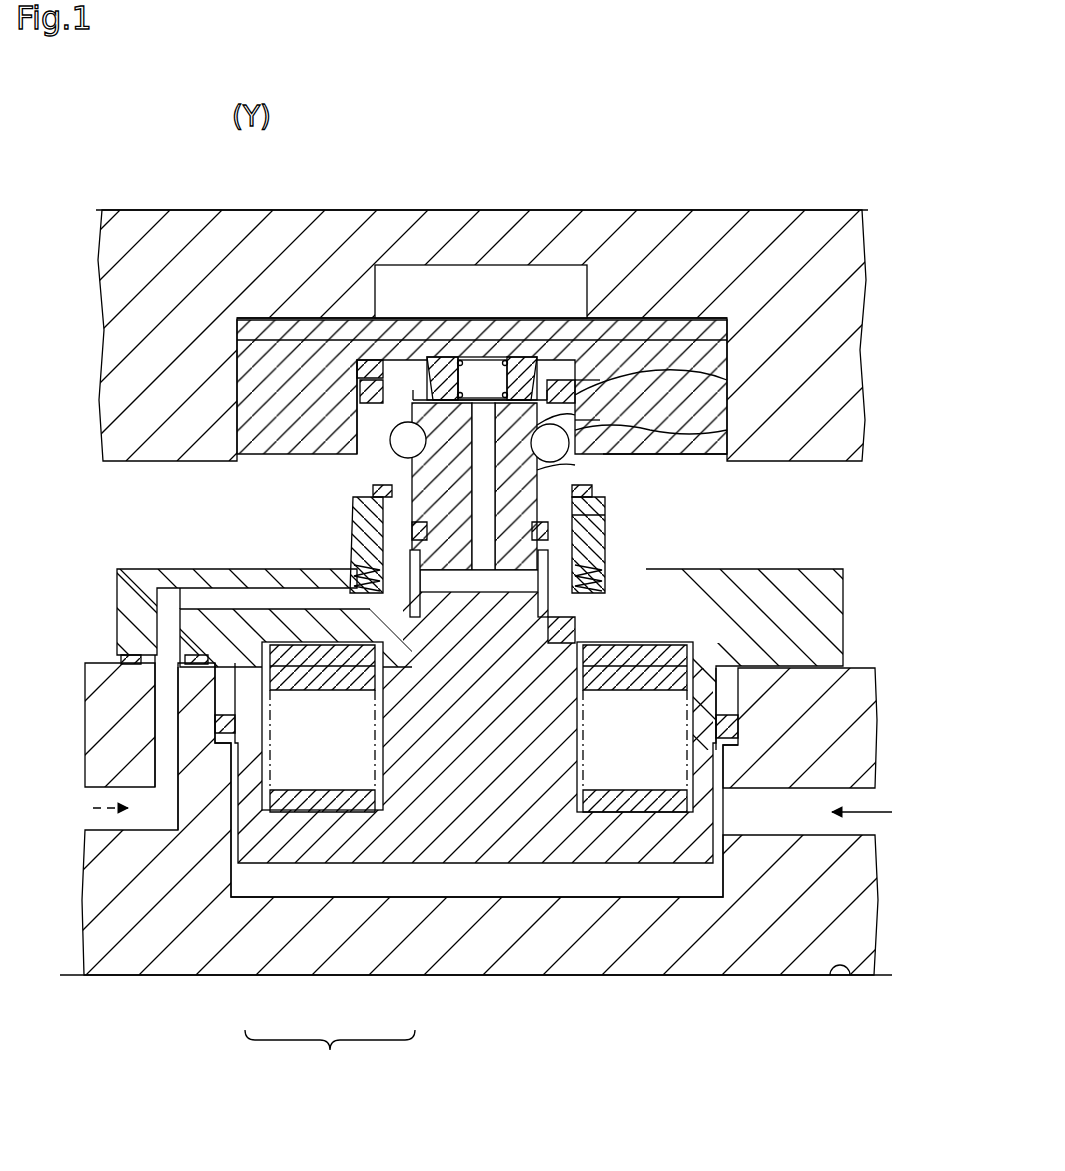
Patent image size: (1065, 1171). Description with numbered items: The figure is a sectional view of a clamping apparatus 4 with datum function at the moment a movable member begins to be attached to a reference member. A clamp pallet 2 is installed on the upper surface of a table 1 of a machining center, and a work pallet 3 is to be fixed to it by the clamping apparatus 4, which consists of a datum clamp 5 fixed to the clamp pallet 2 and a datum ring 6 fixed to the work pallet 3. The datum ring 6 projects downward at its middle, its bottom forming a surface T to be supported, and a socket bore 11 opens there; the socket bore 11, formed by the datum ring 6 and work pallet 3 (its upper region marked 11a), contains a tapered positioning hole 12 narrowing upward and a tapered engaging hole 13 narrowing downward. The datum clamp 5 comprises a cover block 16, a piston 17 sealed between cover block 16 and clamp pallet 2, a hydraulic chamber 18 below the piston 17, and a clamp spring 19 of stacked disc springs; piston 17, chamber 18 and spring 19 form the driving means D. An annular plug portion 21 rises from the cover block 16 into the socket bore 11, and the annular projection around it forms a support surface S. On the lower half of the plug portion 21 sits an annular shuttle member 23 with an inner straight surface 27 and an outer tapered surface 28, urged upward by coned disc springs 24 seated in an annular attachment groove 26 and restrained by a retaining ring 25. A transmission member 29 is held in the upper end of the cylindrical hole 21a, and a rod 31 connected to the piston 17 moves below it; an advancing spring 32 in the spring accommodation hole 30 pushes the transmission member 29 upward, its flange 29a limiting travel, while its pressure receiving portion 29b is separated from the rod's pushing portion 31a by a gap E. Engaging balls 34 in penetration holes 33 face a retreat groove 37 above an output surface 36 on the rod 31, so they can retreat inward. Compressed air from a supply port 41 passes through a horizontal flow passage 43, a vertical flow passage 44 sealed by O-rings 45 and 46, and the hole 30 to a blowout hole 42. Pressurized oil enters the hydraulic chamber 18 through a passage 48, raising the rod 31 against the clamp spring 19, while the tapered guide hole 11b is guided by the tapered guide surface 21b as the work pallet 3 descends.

The table 1 is at (841, 976).
The clamp pallet 2 is at (746, 979).
The work pallet 3 is at (772, 209).
The clamping apparatus 4 is at (843, 478).
The datum clamp 5 is at (767, 559).
The datum ring 6 is at (708, 464).
The socket bore 11 is at (578, 289).
The socket bore portion 11a is at (532, 243).
The tapered guide hole 11b is at (360, 452).
The tapered positioning hole 12 is at (580, 462).
The tapered engaging hole 13 is at (600, 337).
The cover block 16 is at (850, 600).
The piston 17 is at (332, 866).
The hydraulic chamber 18 is at (398, 883).
The clamp spring 19 is at (297, 797).
The plug portion 21 is at (403, 356).
The cylindrical hole 21a is at (600, 515).
The tapered guide surface 21b is at (597, 393).
The shuttle member 23 is at (346, 521).
The coned disc springs 24 is at (607, 572).
The retaining ring 25 is at (575, 486).
The annular attachment groove 26 is at (415, 620).
The straight surface 27 is at (353, 550).
The tapered surface 28 is at (357, 498).
The transmission member 29 is at (512, 362).
The flange 29a is at (590, 423).
The pressure receiving portion 29b is at (517, 377).
The spring accommodation hole 30 is at (487, 351).
The rod 31 is at (556, 658).
The pushing portion 31a is at (522, 486).
The advancing spring 32 is at (452, 357).
The penetration holes 33 is at (442, 486).
The engaging ball 34 is at (345, 385).
The output surface 36 is at (597, 441).
The retreat groove 37 is at (557, 505).
The supply port 41 is at (90, 826).
The blowout hole 42 is at (437, 358).
The horizontal flow passage 43 is at (193, 597).
The vertical flow passage 44 is at (468, 592).
The O-ring 45 is at (500, 592).
The O-ring 46 is at (548, 620).
The pressurized oil supply and discharge passage 48 is at (870, 828).
The surface to be supported T is at (313, 458).
The gap E is at (479, 442).
The support surface S is at (347, 560).
The driving means D is at (330, 1060).